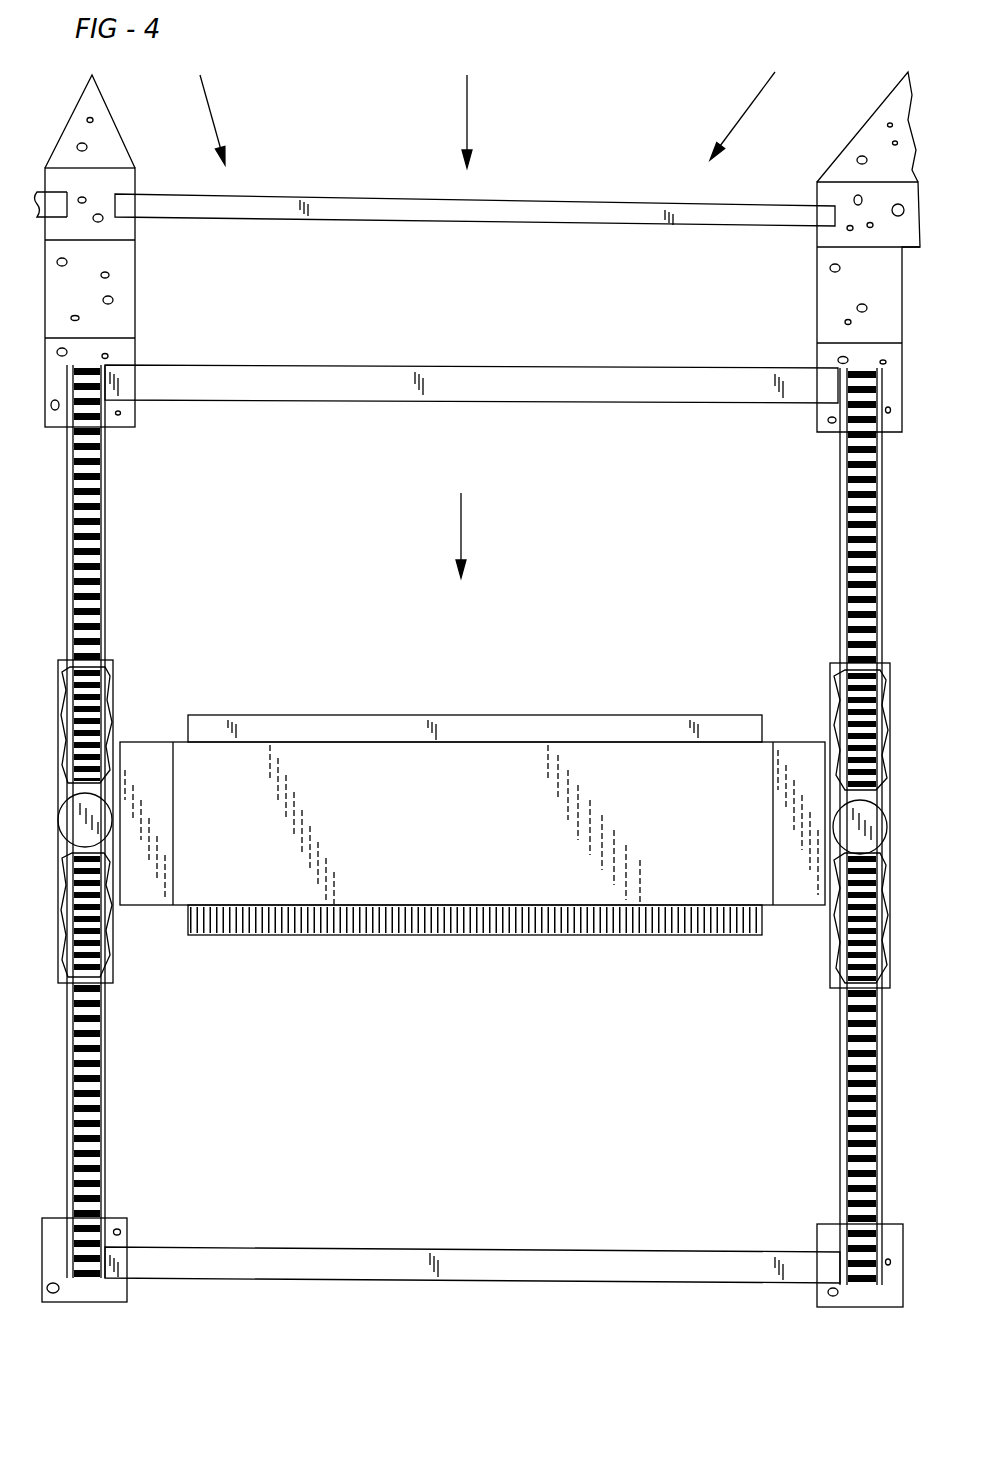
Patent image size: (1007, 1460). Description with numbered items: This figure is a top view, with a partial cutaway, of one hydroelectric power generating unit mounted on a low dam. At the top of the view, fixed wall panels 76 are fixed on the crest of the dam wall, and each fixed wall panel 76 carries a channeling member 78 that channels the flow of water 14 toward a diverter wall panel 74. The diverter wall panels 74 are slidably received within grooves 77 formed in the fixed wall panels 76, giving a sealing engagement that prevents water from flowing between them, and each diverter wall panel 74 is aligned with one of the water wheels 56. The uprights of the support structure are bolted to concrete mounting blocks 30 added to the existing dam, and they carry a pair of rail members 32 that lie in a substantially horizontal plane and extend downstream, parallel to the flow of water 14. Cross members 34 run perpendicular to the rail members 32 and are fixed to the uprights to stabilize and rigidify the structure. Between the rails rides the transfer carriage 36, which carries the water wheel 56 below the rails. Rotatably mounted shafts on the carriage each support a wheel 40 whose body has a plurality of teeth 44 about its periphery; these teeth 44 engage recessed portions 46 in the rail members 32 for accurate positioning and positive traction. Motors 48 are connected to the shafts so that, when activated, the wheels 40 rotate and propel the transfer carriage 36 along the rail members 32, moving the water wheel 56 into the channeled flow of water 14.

The flow of water 14 is at (467, 103).
The concrete mounting blocks 30 is at (120, 348).
The rail members 32 is at (105, 566).
The cross members 34 is at (503, 380).
The transfer carriage 36 is at (593, 762).
The wheel 40 is at (474, 810).
The teeth 44 is at (102, 726).
The recessed portions 46 is at (105, 512).
The motors 48 is at (88, 815).
The water wheel 56 is at (455, 722).
The diverter wall panels 74 is at (478, 204).
The fixed wall panel 76 is at (60, 178).
The grooves 77 is at (435, 214).
The channeling member 78 is at (88, 147).